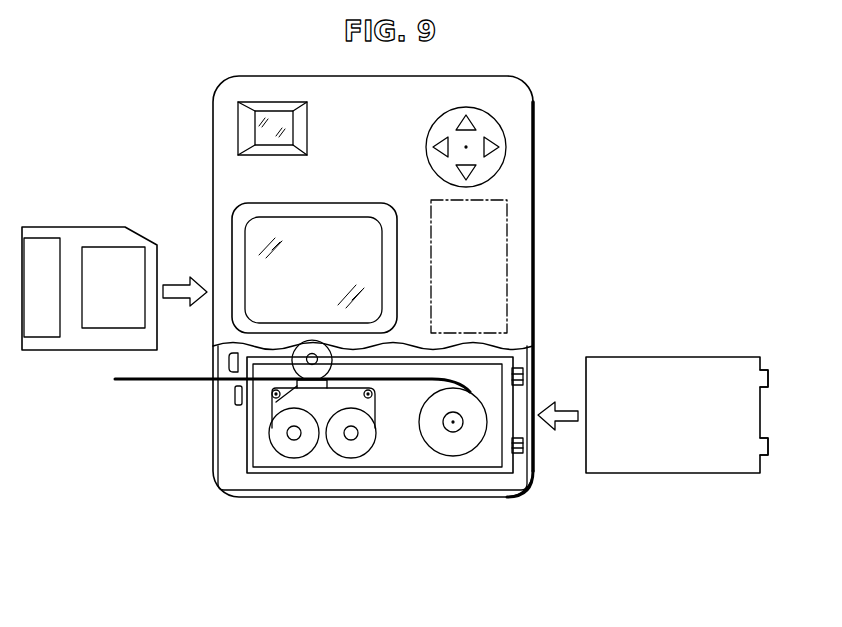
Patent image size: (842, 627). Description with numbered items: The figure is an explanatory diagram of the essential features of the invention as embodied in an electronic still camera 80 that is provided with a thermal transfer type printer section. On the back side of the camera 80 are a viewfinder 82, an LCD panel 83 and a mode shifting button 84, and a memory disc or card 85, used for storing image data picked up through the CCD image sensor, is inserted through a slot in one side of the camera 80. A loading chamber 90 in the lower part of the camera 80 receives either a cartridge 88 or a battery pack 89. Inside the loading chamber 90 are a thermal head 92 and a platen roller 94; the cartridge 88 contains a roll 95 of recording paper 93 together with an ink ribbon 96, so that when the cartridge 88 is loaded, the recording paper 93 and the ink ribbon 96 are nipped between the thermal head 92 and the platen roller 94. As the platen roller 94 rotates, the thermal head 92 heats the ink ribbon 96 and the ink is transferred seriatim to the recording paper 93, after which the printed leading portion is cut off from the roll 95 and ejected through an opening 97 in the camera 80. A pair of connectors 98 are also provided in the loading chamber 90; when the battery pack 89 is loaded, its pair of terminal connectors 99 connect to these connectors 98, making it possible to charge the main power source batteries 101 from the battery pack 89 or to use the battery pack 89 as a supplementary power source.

The electronic still camera 80 is at (592, 88).
The viewfinder 82 is at (256, 120).
The LCD panel 83 is at (347, 227).
The mode shifting button 84 is at (527, 150).
The memory disc or card 85 is at (86, 227).
The cartridge 88 is at (299, 490).
The battery pack 89 is at (678, 337).
The loading chamber 90 is at (406, 498).
The thermal head 92 is at (276, 416).
The recording paper 93 is at (130, 378).
The platen roller 94 is at (338, 350).
The roll 95 is at (462, 481).
The ink ribbon 96 is at (351, 458).
The paper discharge slot 97 is at (212, 397).
The connectors 98 is at (518, 367).
The terminal connectors 99 is at (765, 373).
The main power source batteries 101 is at (507, 227).